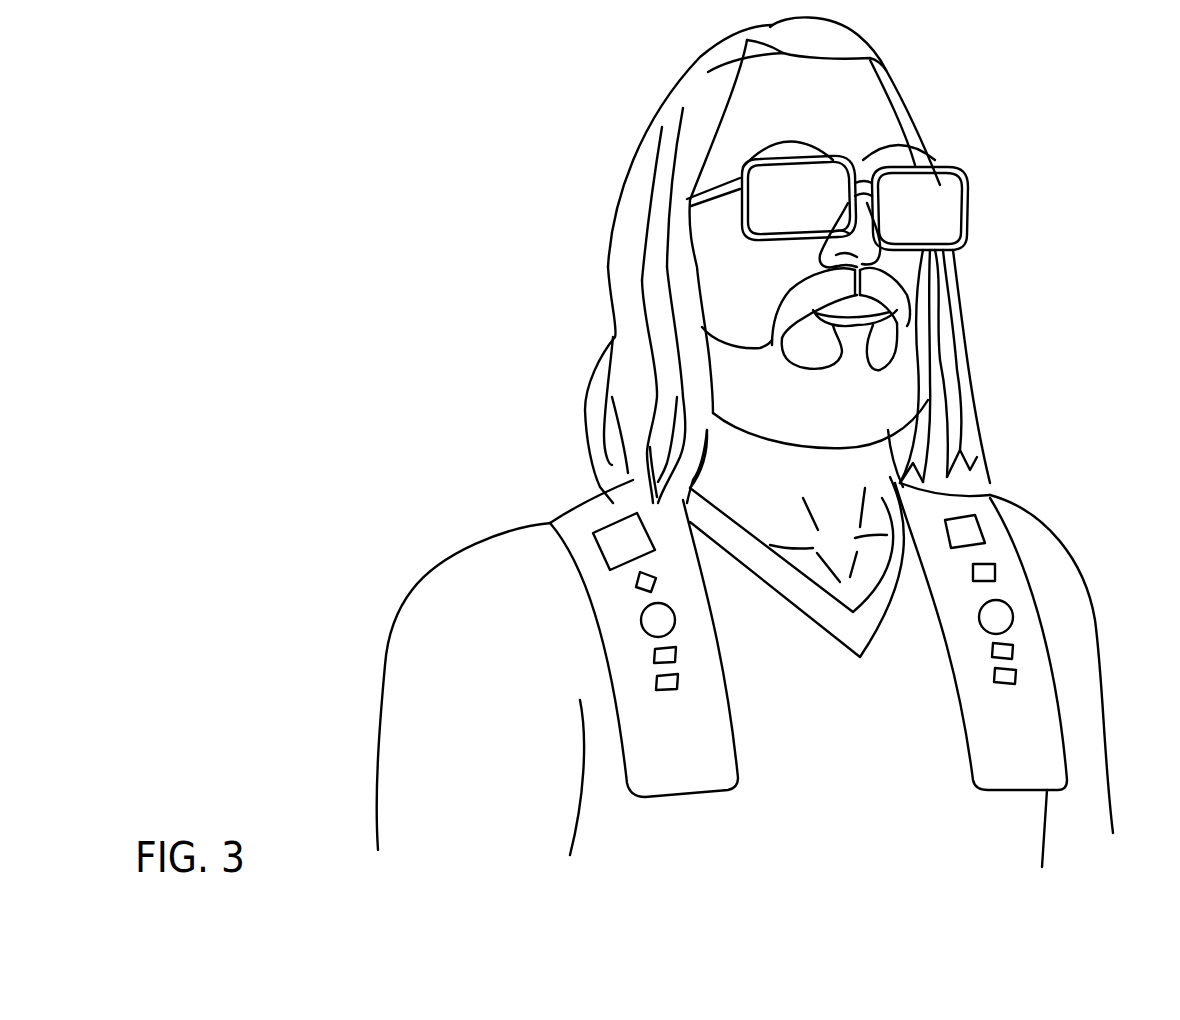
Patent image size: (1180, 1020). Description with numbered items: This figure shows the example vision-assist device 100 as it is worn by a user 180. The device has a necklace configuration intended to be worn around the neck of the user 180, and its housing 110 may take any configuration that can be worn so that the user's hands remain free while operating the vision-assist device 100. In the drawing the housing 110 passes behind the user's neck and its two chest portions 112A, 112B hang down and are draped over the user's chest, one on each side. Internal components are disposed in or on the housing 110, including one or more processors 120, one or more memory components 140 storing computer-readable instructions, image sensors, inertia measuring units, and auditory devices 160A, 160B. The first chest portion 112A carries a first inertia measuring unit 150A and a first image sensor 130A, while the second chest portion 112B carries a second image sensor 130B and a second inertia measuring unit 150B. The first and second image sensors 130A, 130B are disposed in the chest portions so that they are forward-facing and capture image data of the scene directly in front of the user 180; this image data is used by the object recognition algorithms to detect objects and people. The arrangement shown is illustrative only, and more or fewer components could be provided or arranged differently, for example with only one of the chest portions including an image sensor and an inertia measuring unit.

The vision-assist device 100 is at (839, 623).
The housing 110 is at (854, 638).
The left strap 112A is at (698, 648).
The right strap 112B is at (962, 662).
The processors 120 is at (658, 578).
The first image sensor 130A is at (652, 620).
The second image sensor 130B is at (1002, 614).
The memory components 140 is at (653, 653).
The first inertia measuring unit 150A is at (600, 520).
The second inertia measuring unit 150B is at (970, 514).
The left microphone 160A is at (667, 690).
The right microphone 160B is at (1005, 684).
The user 180 is at (1003, 143).